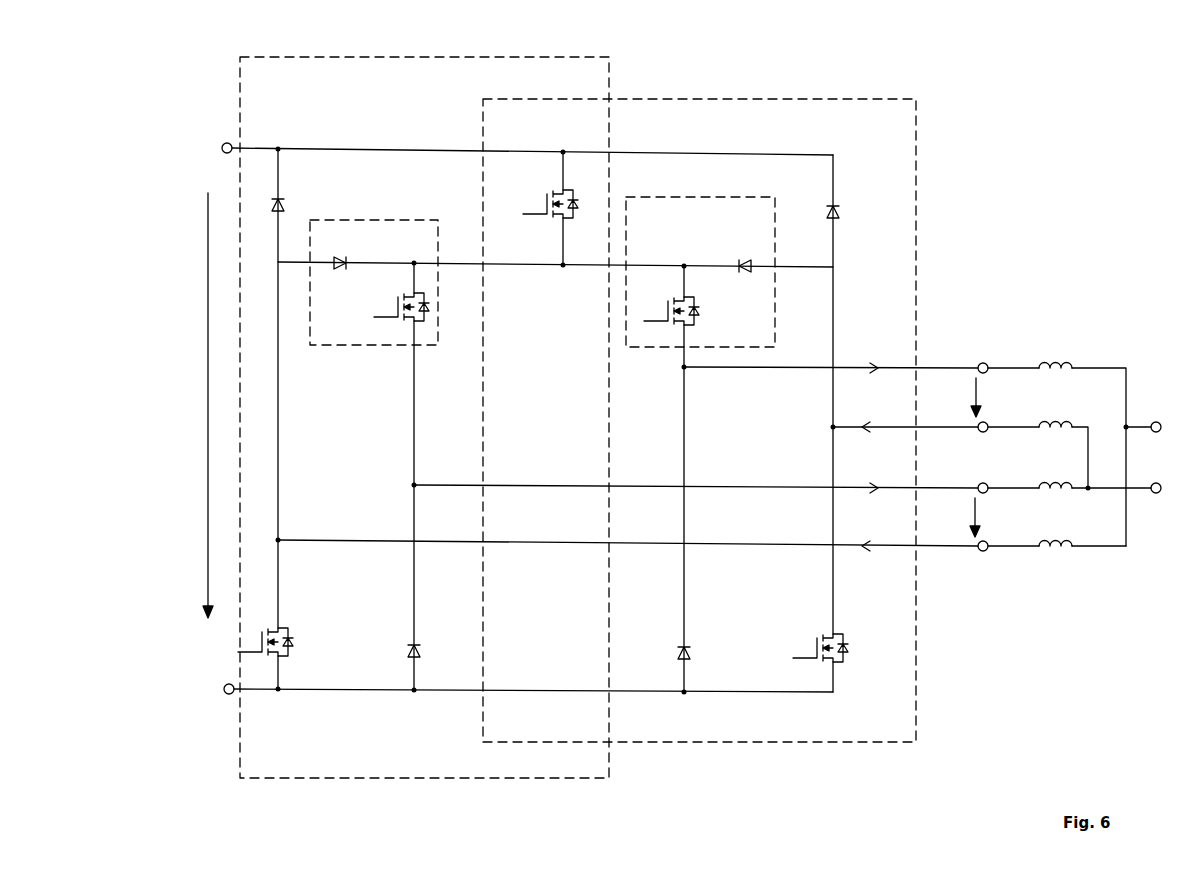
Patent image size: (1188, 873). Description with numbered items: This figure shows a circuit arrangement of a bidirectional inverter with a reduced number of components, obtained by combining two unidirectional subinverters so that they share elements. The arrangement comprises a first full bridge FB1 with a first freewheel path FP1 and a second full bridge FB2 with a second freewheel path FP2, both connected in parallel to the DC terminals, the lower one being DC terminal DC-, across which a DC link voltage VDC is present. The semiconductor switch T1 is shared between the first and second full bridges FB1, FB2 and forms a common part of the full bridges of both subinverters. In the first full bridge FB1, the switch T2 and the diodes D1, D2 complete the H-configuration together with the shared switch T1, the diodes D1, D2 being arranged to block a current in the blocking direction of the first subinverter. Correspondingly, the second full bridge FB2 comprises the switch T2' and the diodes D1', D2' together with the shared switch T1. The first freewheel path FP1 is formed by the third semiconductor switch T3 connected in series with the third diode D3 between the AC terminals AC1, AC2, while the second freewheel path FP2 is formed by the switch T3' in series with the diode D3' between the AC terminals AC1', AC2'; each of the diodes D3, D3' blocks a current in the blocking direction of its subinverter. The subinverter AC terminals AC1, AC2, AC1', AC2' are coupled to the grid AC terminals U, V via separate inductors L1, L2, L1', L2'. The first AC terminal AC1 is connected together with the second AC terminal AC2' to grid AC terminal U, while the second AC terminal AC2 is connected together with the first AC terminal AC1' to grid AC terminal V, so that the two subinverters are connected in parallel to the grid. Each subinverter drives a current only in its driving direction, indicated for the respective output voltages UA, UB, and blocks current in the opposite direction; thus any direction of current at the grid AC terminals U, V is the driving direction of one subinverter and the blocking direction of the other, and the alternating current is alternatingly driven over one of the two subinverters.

The first full bridge FB1 is at (812, 95).
The second full bridge FB2 is at (507, 54).
The first freewheel path FP1 is at (705, 196).
The second freewheel path FP2 is at (362, 219).
The negative DC terminal DC- is at (508, 689).
The DC link voltage VDC is at (182, 405).
The diode D1 is at (819, 213).
The diode of second subinverter D1' is at (296, 207).
The diode D2 is at (672, 655).
The diode of second subinverter D2' is at (398, 652).
The third diode D3 is at (750, 256).
The third diode of second subinverter D3' is at (342, 252).
The semiconductor switch T1 is at (549, 204).
The semiconductor switch T2 is at (819, 648).
The semiconductor switch of second subinverter T2' is at (262, 642).
The third semiconductor switch T3 is at (666, 311).
The third semiconductor switch of second subinverter T3' is at (395, 307).
The first AC terminal AC1 is at (1000, 381).
The second AC terminal AC2 is at (1000, 439).
The first AC terminal of second subinverter AC1' is at (1002, 499).
The second AC terminal of second subinverter AC2' is at (1002, 558).
The inductor L1 is at (1055, 355).
The inductor L2 is at (1055, 414).
The inductor L1' is at (1055, 474).
The inductor L2' is at (1055, 532).
The output voltage of first bridge UA is at (961, 397).
The output voltage of second bridge UB is at (961, 517).
The grid AC terminal U is at (1155, 415).
The grid AC terminal V is at (1155, 476).